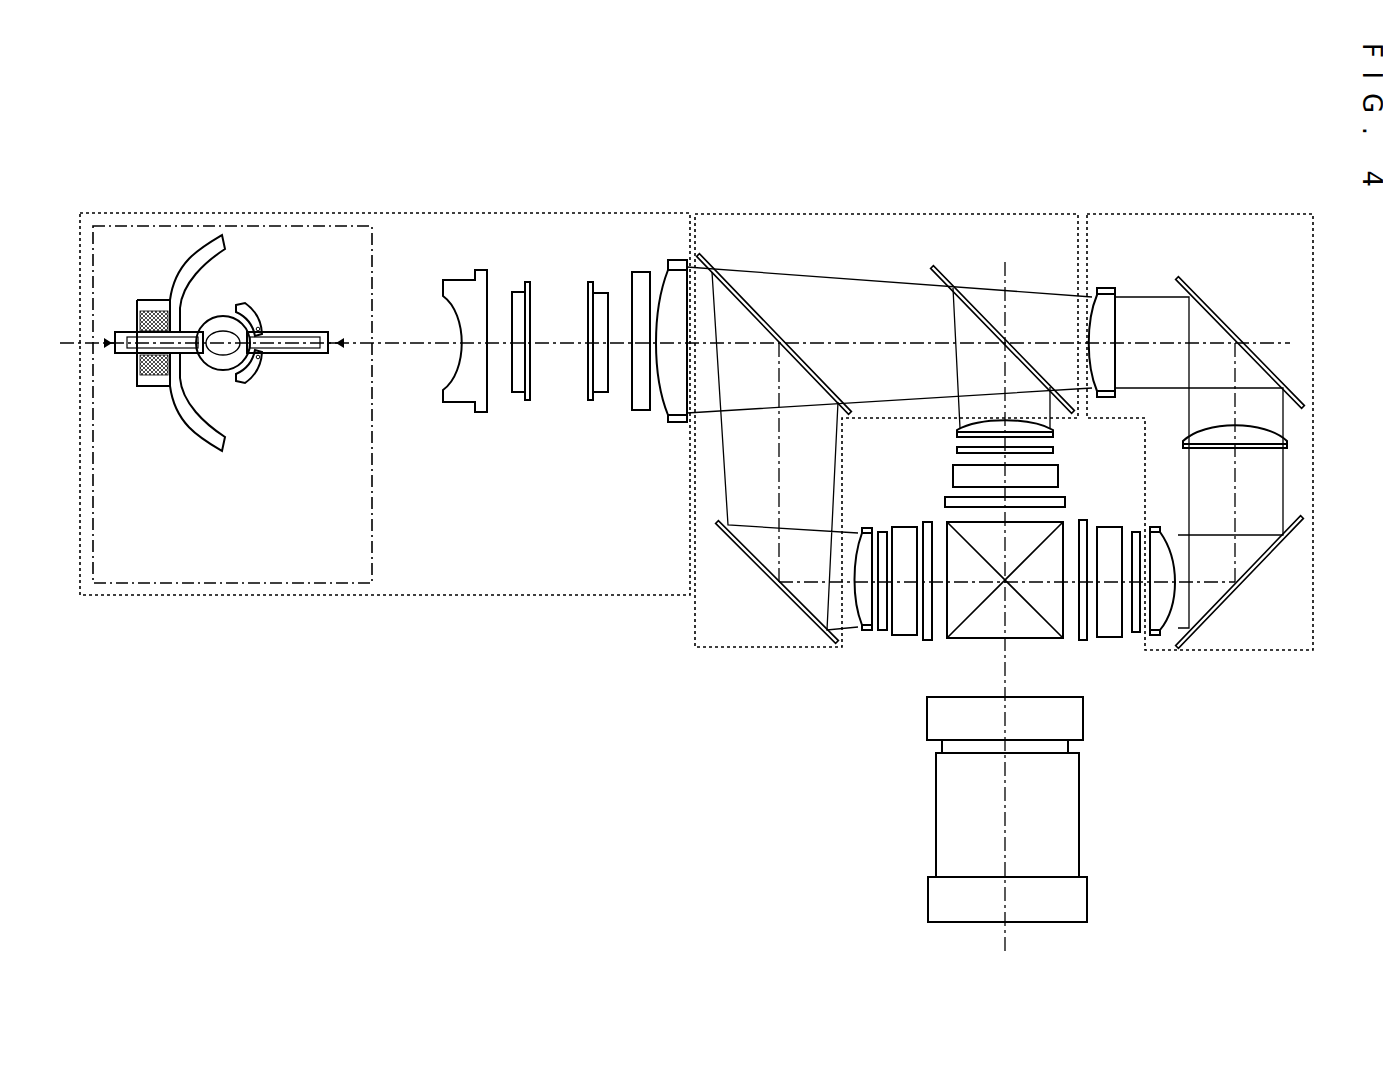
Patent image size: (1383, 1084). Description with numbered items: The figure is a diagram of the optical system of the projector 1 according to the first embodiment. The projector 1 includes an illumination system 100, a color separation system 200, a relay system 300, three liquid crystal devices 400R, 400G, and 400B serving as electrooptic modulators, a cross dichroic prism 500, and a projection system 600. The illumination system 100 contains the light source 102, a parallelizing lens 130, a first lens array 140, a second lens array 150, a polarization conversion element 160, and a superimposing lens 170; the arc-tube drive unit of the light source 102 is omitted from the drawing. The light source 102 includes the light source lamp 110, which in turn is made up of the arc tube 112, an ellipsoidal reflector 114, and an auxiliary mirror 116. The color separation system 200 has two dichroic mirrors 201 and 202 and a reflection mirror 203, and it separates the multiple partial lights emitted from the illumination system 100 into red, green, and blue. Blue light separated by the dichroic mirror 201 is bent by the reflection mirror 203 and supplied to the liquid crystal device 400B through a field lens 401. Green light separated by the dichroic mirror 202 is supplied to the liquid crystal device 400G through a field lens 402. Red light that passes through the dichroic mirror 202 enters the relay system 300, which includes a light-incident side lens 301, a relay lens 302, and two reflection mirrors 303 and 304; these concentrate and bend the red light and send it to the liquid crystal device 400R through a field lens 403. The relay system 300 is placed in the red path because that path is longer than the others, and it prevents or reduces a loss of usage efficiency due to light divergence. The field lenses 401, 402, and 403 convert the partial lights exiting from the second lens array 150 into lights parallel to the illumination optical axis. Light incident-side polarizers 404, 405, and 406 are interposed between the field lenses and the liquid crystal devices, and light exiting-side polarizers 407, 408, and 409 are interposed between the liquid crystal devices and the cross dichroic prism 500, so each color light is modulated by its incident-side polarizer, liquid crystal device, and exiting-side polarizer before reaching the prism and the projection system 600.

The projector 1 is at (1103, 158).
The illumination system 100 is at (446, 209).
The light source 102 is at (372, 517).
The light source lamp 110 is at (226, 406).
The arc tube 112 is at (215, 386).
The ellipsoidal reflector 114 is at (185, 420).
The auxiliary mirror 116 is at (292, 416).
The parallelizing lens 130 is at (468, 406).
The first lens array 140 is at (517, 286).
The second lens array 150 is at (593, 400).
The polarization conversion element 160 is at (634, 272).
The superimposing lens 170 is at (680, 423).
The color separation system 200 is at (874, 210).
The dichroic mirror 201 is at (742, 292).
The dichroic mirror 202 is at (954, 282).
The reflection mirror 203 is at (740, 549).
The relay system 300 is at (1182, 212).
The light-incident side lens 301 is at (1106, 286).
The relay lens 302 is at (1178, 442).
The reflection mirror 303 is at (1240, 334).
The reflection mirror 304 is at (1256, 573).
The liquid crystal device 400B is at (903, 527).
The liquid crystal device 400G is at (1060, 482).
The liquid crystal device 400R is at (1110, 640).
The field lens 401 is at (857, 637).
The field lens 402 is at (957, 431).
The field lens 403 is at (1163, 527).
The light incident-side polarizer 404 is at (880, 638).
The light incident-side polarizer 405 is at (957, 450).
The light incident-side polarizer 406 is at (1135, 530).
The light exiting-side polarizer 407 is at (928, 640).
The light exiting-side polarizer 408 is at (947, 501).
The light exiting-side polarizer 409 is at (1083, 520).
The cross dichroic prism 500 is at (953, 642).
The projection system 600 is at (936, 823).